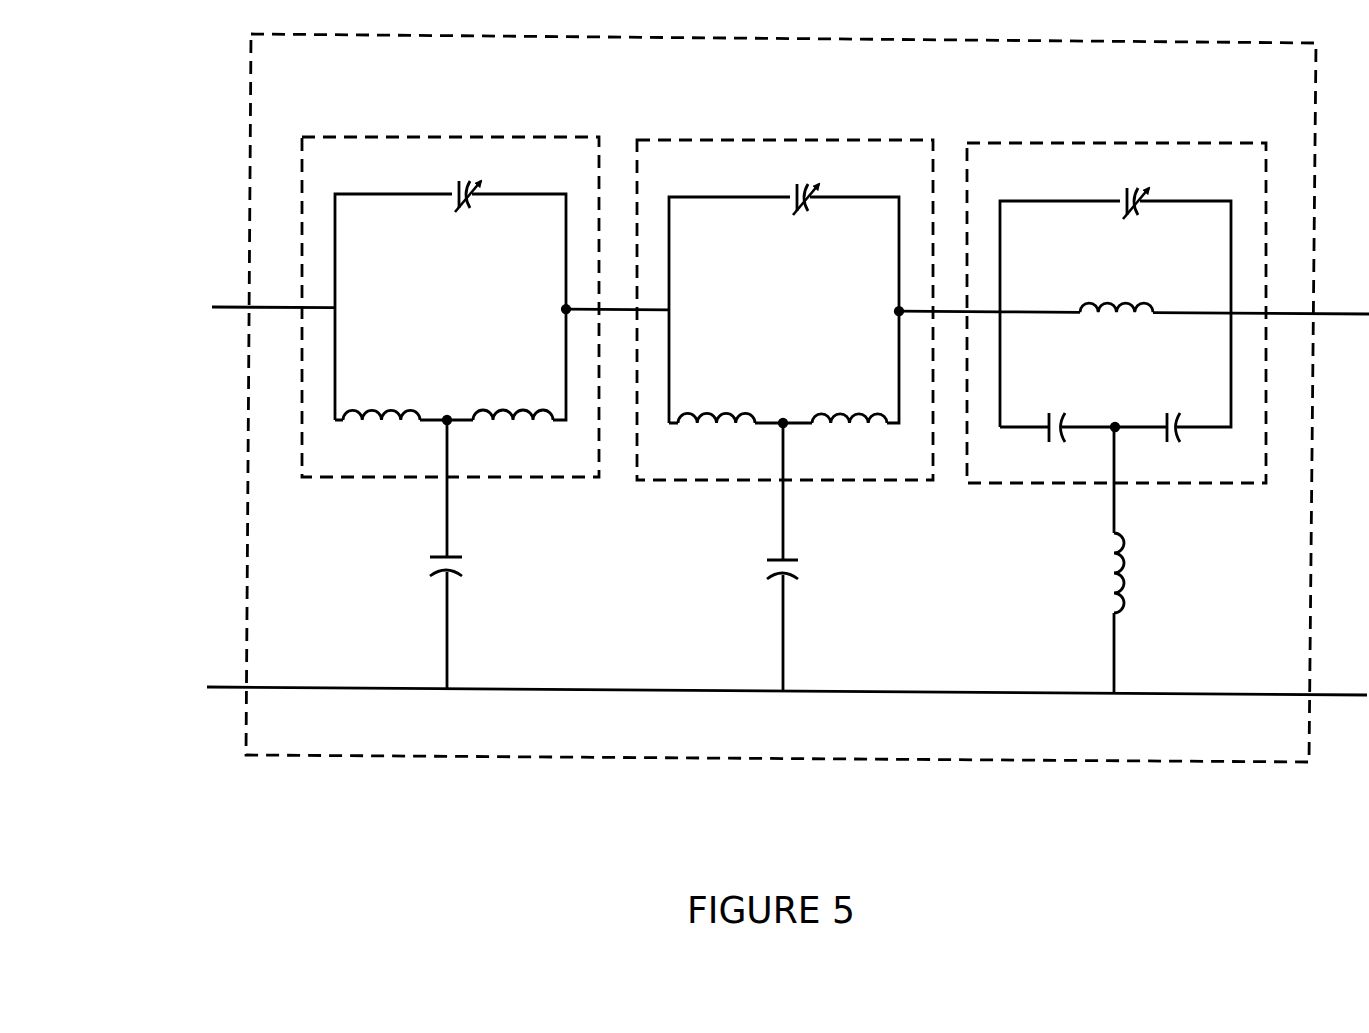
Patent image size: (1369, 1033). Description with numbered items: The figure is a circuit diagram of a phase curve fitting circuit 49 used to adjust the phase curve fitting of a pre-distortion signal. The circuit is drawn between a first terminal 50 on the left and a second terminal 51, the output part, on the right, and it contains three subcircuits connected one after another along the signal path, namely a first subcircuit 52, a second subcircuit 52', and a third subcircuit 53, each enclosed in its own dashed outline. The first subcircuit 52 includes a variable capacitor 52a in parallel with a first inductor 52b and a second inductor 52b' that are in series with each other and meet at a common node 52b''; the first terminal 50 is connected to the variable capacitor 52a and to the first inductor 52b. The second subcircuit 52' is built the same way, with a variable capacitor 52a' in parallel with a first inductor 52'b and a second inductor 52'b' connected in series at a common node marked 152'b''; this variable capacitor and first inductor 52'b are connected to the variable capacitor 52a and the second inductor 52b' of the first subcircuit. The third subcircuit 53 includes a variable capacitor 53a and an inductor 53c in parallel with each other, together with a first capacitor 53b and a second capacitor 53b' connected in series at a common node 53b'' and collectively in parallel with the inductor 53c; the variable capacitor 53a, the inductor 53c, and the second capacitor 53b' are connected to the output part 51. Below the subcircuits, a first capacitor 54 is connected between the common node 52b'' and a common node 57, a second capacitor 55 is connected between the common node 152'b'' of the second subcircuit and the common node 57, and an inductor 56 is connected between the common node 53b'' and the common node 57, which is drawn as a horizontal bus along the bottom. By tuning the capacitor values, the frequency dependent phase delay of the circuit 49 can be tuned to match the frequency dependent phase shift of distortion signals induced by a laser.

The phase curve fitting circuit 49 is at (240, 100).
The first terminal 50 is at (240, 309).
The second terminal 51 is at (1330, 318).
The first subcircuit 52 is at (450, 280).
The variable capacitor 52a is at (433, 179).
The first inductor 52b is at (387, 389).
The second inductor 52b' is at (510, 389).
The common node 52b'' is at (405, 446).
The second subcircuit 52' is at (785, 284).
The variable capacitor 52a' is at (770, 220).
The first inductor 52'b is at (725, 393).
The second inductor 52'b' is at (844, 393).
The center tap node 152'b'' is at (736, 449).
The third subcircuit 53 is at (1115, 143).
The variable capacitor 53a is at (1137, 206).
The first capacitor 53b is at (1093, 407).
The second capacitor 53b' is at (1198, 405).
The common node 53b'' is at (1074, 453).
The inductor 53c is at (1155, 311).
The first capacitor 54 is at (450, 553).
The second capacitor 55 is at (788, 556).
The inductor 56 is at (1125, 560).
The common node 57 is at (535, 690).